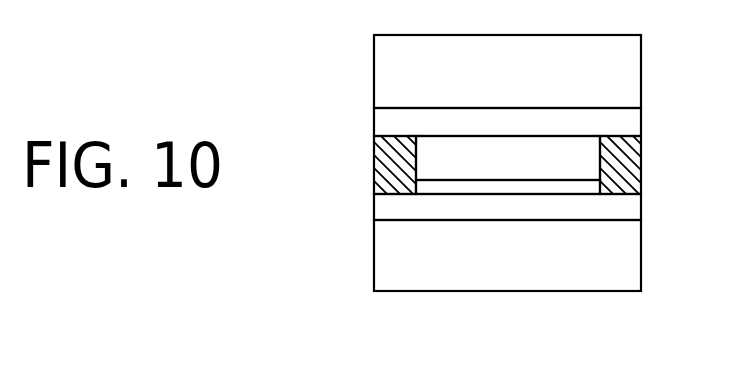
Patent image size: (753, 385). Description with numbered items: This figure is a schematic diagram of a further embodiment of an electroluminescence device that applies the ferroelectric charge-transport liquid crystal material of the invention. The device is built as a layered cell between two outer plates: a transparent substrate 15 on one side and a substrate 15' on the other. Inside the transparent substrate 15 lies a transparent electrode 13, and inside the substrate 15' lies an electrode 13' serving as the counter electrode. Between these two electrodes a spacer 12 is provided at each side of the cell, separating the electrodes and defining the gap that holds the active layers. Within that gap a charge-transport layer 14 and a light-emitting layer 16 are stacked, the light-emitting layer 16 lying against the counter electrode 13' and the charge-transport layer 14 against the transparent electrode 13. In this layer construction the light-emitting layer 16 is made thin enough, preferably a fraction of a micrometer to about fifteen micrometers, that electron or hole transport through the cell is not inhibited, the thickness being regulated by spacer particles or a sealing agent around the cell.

The transparent substrate 15 is at (547, 70).
The transparent electrode 13 is at (547, 118).
The spacer 12 is at (632, 158).
The charge-transport layer 14 is at (543, 170).
The light-emitting layer 16 is at (452, 190).
The electrode (counter electrode) 13' is at (550, 210).
The substrate 15' is at (550, 256).